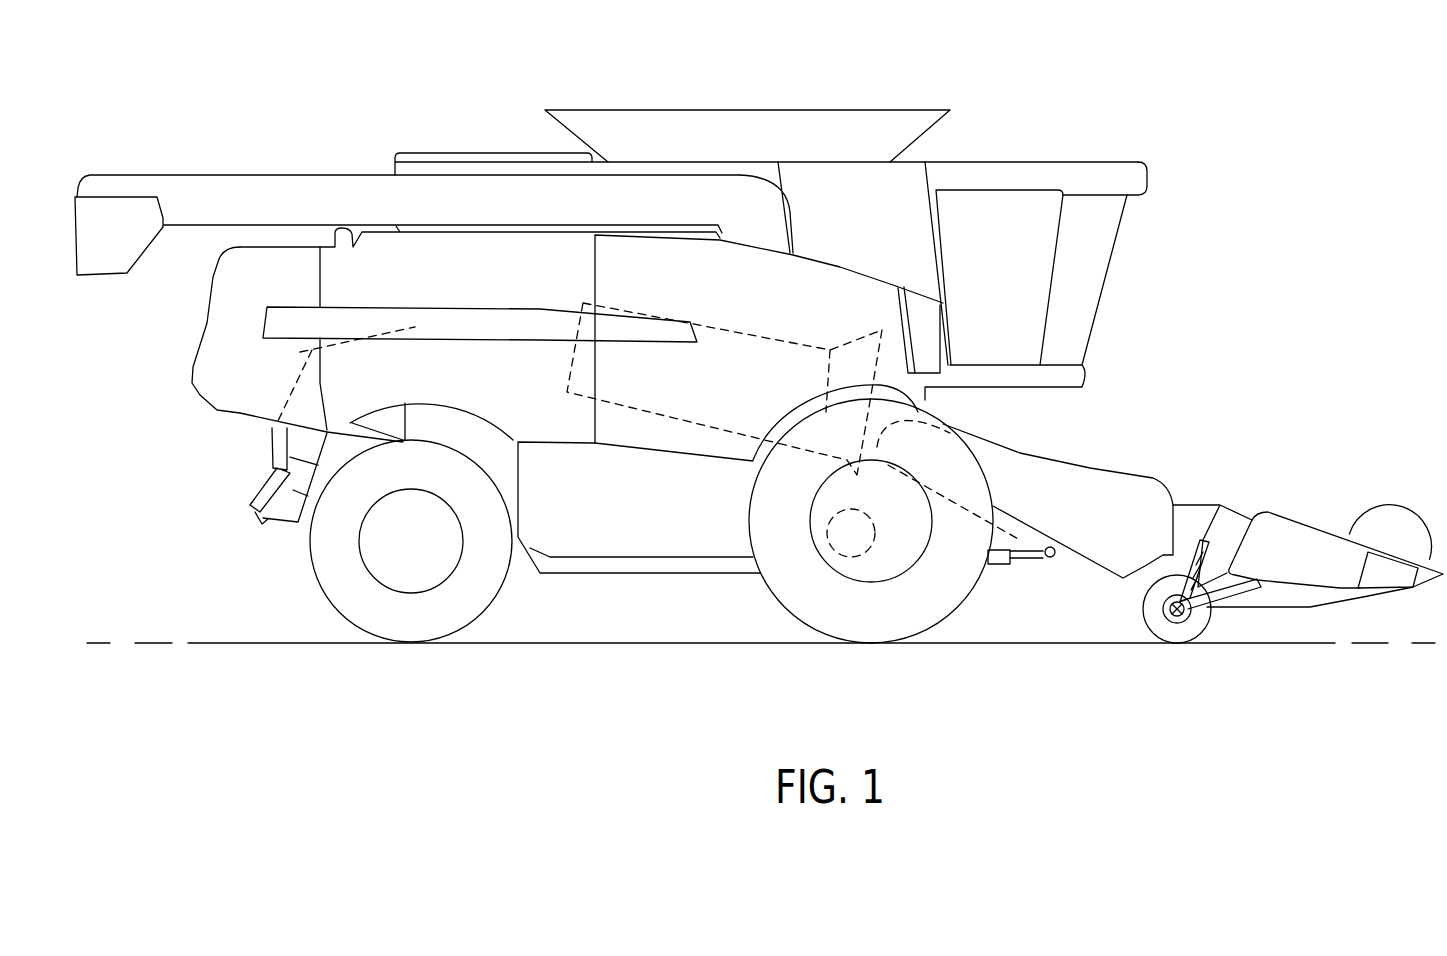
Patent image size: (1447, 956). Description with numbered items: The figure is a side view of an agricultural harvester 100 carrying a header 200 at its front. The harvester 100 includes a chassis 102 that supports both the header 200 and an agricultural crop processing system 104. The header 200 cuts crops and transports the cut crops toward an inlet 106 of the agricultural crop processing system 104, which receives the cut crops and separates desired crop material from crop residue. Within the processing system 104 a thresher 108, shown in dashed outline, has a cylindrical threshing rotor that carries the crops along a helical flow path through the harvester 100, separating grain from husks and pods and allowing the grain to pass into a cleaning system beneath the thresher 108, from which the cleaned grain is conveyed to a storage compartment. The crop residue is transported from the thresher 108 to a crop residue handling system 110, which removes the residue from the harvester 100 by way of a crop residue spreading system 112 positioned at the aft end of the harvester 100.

The agricultural harvester 100 is at (1150, 60).
The chassis 102 is at (571, 582).
The agricultural crop processing system 104 is at (735, 300).
The inlet 106 is at (962, 416).
The thresher 108 is at (742, 328).
The crop residue handling system 110 is at (372, 293).
The crop residue spreading system 112 is at (253, 483).
The header 200 is at (1344, 484).